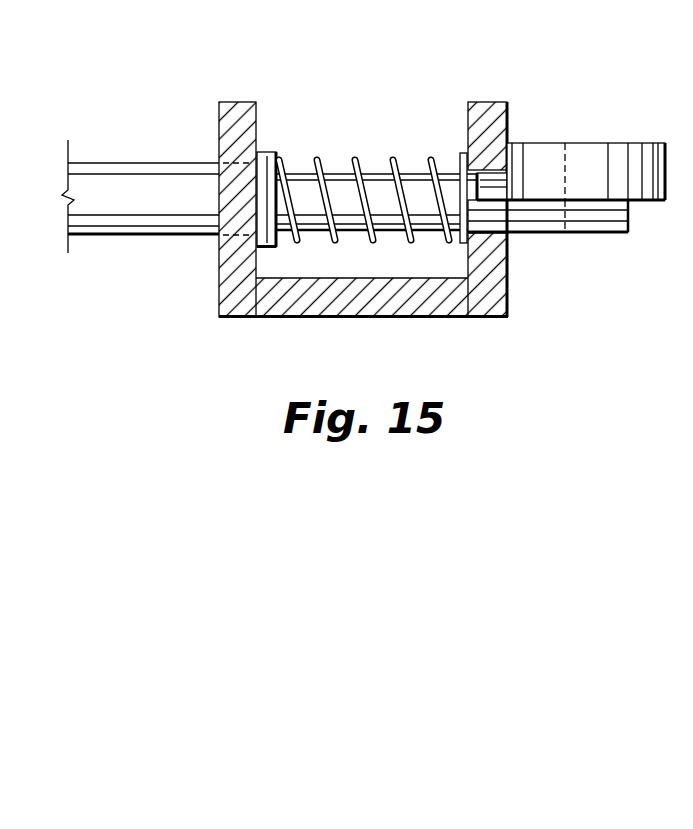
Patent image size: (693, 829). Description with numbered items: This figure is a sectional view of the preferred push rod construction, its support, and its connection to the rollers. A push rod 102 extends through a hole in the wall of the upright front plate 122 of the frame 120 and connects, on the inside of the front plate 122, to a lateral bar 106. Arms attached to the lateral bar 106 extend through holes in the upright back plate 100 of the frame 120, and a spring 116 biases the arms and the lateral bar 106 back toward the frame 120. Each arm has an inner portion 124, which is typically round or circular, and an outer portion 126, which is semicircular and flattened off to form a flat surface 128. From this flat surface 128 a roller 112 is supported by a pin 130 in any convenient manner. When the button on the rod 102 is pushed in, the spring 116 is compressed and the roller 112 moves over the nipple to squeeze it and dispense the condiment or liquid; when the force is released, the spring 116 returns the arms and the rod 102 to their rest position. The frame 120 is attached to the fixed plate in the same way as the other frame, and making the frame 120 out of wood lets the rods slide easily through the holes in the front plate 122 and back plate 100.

The back plate 100 is at (343, 253).
The push rod 102 is at (123, 190).
The lateral bar 106 is at (273, 152).
The roller 112 is at (622, 168).
The spring 116 is at (353, 158).
The frame 120 is at (426, 326).
The front plate 122 is at (233, 262).
The inner portion 124 is at (402, 156).
The outer portion 126 is at (583, 233).
The flat surface 128 is at (497, 193).
The pin 130 is at (590, 142).